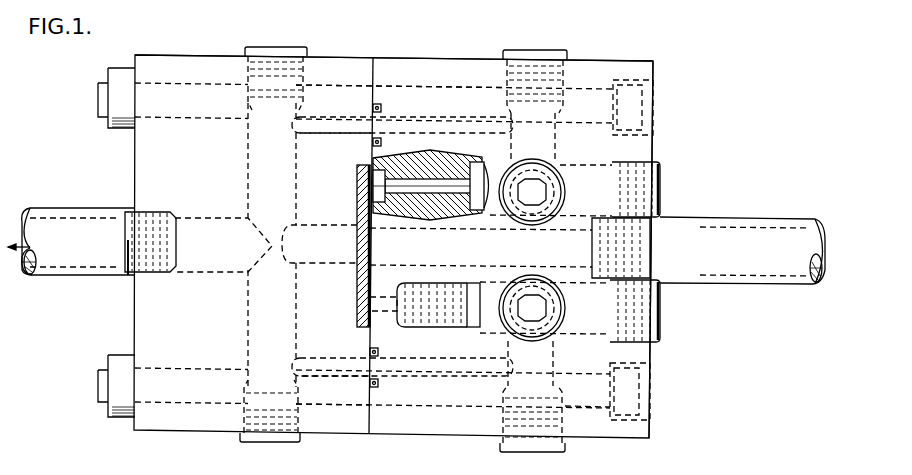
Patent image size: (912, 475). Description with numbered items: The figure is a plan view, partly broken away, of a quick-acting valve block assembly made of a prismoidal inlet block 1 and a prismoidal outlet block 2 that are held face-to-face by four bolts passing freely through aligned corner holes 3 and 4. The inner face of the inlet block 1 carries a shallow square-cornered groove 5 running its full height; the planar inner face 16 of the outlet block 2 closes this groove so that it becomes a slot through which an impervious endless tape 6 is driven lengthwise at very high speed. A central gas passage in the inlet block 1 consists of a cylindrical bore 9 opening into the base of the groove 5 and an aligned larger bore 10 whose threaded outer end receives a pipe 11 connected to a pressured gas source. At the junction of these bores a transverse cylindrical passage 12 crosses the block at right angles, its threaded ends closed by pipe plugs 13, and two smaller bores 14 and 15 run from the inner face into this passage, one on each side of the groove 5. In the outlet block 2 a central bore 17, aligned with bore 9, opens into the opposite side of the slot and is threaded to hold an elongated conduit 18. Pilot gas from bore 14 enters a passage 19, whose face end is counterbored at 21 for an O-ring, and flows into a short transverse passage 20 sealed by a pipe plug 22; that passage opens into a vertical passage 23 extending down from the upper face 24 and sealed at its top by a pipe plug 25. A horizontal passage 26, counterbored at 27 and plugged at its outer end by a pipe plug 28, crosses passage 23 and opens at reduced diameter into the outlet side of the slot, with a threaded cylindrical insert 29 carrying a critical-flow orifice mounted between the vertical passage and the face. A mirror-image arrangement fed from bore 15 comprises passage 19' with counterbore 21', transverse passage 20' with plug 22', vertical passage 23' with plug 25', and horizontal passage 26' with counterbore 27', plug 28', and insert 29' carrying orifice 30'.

The inlet block 1 is at (138, 156).
The outlet block 2 is at (653, 73).
The corner holes 3 is at (218, 118).
The corner holes 4 is at (453, 90).
The groove 5 is at (356, 181).
The impervious tape 6 is at (358, 292).
The cylindrical bore 9 is at (329, 264).
The larger-diameter bore 10 is at (236, 222).
The tubular element 11 is at (46, 208).
The transverse cylindrical passage 12 is at (248, 300).
The pipe plugs 13 is at (262, 47).
The bore 14 is at (333, 368).
The bore 15 is at (345, 133).
The inner face 16 is at (368, 417).
The central cylindrical bore 17 is at (449, 230).
The conduit 18 is at (783, 217).
The cylindrical passage 19 is at (406, 382).
The cylindrical passage 19' is at (406, 114).
The transverse cylindrical passage 20 is at (600, 381).
The transverse cylindrical passage 20' is at (605, 107).
The counterbore 21 is at (396, 364).
The counterbore 21' is at (401, 121).
The pipe plug 22 is at (511, 404).
The pipe plug 22' is at (535, 90).
The vertical cylindrical passage 23 is at (560, 308).
The vertical cylindrical passage 23' is at (563, 194).
The upper face 24 is at (625, 354).
The pipe plug 25 is at (532, 288).
The pipe plug 25' is at (532, 178).
The horizontal cylindrical passage 26 is at (480, 305).
The horizontal cylindrical passage 26' is at (536, 186).
The counterbore 27 is at (339, 286).
The counterbore 27' is at (340, 205).
The pipe plug 28 is at (662, 311).
The pipe plug 28' is at (666, 189).
The cylindrical insert 29 is at (436, 322).
The cylindrical insert 29' is at (438, 181).
The orifice 30' is at (422, 212).